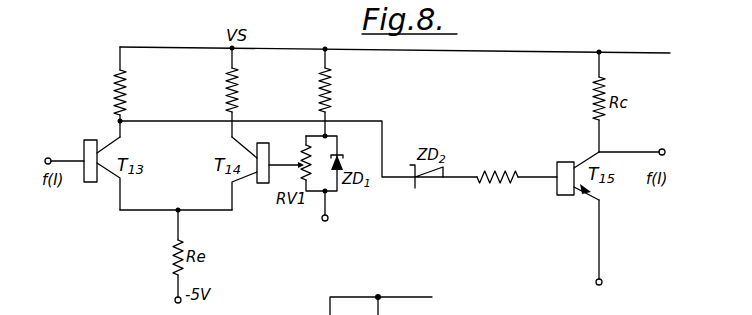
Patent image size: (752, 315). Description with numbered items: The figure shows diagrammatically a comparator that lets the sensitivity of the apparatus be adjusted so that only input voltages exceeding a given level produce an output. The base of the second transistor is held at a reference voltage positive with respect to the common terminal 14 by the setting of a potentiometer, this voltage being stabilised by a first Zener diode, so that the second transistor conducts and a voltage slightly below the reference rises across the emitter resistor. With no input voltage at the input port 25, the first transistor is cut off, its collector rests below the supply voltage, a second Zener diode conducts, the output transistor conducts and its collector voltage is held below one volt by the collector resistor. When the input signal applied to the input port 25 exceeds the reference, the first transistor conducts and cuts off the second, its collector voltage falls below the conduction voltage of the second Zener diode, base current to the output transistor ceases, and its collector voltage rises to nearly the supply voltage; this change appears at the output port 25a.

The input port 25 is at (62, 152).
The output port 25a is at (637, 142).
The common terminal 14 is at (610, 244).